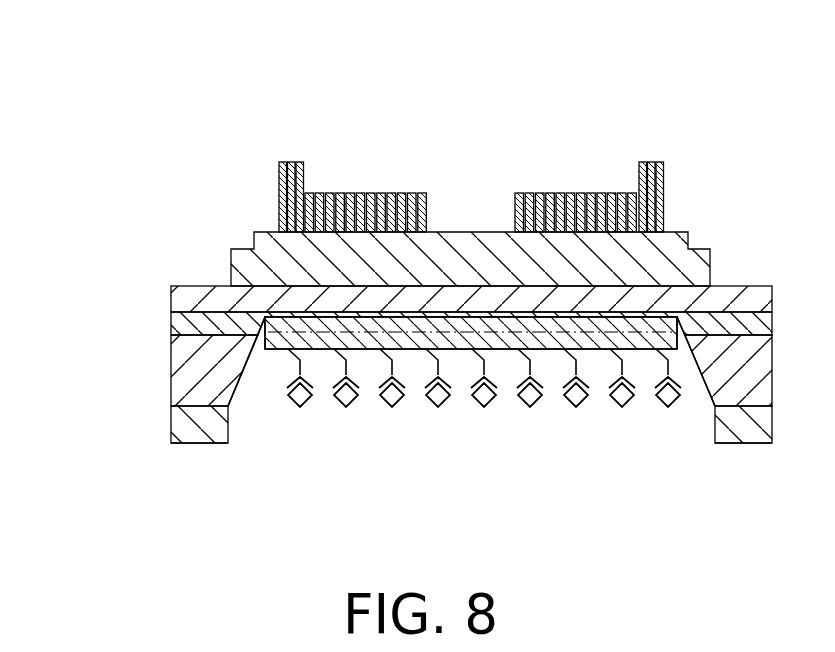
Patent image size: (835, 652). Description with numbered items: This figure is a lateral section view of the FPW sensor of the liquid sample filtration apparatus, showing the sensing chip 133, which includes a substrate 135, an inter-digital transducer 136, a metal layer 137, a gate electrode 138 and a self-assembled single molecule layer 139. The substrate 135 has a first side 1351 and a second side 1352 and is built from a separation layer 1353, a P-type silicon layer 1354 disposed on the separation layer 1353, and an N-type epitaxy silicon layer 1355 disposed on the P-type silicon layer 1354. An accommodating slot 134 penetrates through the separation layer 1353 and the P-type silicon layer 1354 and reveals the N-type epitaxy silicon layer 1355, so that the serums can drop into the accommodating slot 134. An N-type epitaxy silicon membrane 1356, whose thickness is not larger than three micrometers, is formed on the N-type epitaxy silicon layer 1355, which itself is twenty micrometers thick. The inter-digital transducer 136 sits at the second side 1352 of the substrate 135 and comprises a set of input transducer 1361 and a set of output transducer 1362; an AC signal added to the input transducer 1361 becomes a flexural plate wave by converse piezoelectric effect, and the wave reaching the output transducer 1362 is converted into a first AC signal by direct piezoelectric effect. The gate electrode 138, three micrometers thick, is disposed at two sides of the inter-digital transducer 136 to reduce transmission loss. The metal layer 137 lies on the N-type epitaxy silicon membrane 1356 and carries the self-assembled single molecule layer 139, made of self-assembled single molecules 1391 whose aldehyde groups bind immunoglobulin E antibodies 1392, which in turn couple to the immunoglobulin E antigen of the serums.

The sensing chip 133 is at (226, 121).
The accommodating slot 134 is at (265, 378).
The substrate 135 is at (72, 315).
The first side 1351 is at (207, 443).
The second side 1352 is at (190, 285).
The separation layer 1353 is at (180, 420).
The P-type silicon layer 1354 is at (180, 370).
The N-type epitaxy silicon layer 1355 is at (180, 326).
The N-type epitaxy silicon membrane 1356 is at (632, 316).
The inter-digital transducer 136 is at (522, 96).
The input transducer 1361 is at (407, 191).
The output transducer 1362 is at (535, 191).
The metal layer 137 is at (657, 327).
The gate electrode 138 is at (290, 161).
The self-assembled single molecule layer 139 is at (707, 490).
The self-assembled single molecules 1391 is at (680, 384).
The immunoglobulin E antibodies 1392 is at (682, 378).